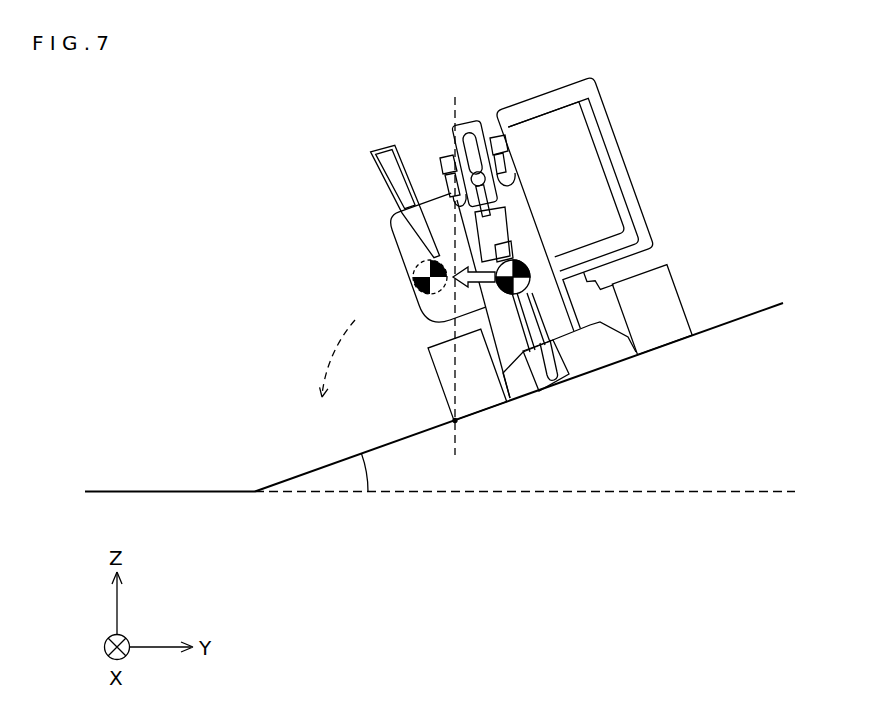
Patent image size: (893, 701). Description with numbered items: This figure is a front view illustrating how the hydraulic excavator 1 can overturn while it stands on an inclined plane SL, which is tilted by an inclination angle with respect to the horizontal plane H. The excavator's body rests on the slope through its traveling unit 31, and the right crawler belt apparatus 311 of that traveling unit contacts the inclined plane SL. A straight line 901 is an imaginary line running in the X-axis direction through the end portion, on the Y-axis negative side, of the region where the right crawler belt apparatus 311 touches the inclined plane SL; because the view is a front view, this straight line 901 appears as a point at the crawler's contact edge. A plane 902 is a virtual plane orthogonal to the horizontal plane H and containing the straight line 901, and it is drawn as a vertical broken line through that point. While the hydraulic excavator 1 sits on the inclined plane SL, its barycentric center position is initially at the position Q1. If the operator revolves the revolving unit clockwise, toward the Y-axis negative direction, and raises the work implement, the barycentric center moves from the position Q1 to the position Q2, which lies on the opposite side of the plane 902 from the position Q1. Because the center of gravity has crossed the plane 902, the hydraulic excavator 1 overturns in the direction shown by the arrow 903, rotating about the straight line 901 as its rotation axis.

The hydraulic excavator 1 is at (552, 246).
The traveling unit 31 is at (652, 310).
The right crawler belt apparatus 311 is at (467, 374).
The position Q1 is at (526, 266).
The position Q2 is at (416, 268).
The straight line 901 is at (457, 421).
The plane 902 is at (454, 112).
The arrow 903 is at (342, 330).
The inclined plane SL is at (762, 300).
The horizontal plane H is at (143, 490).